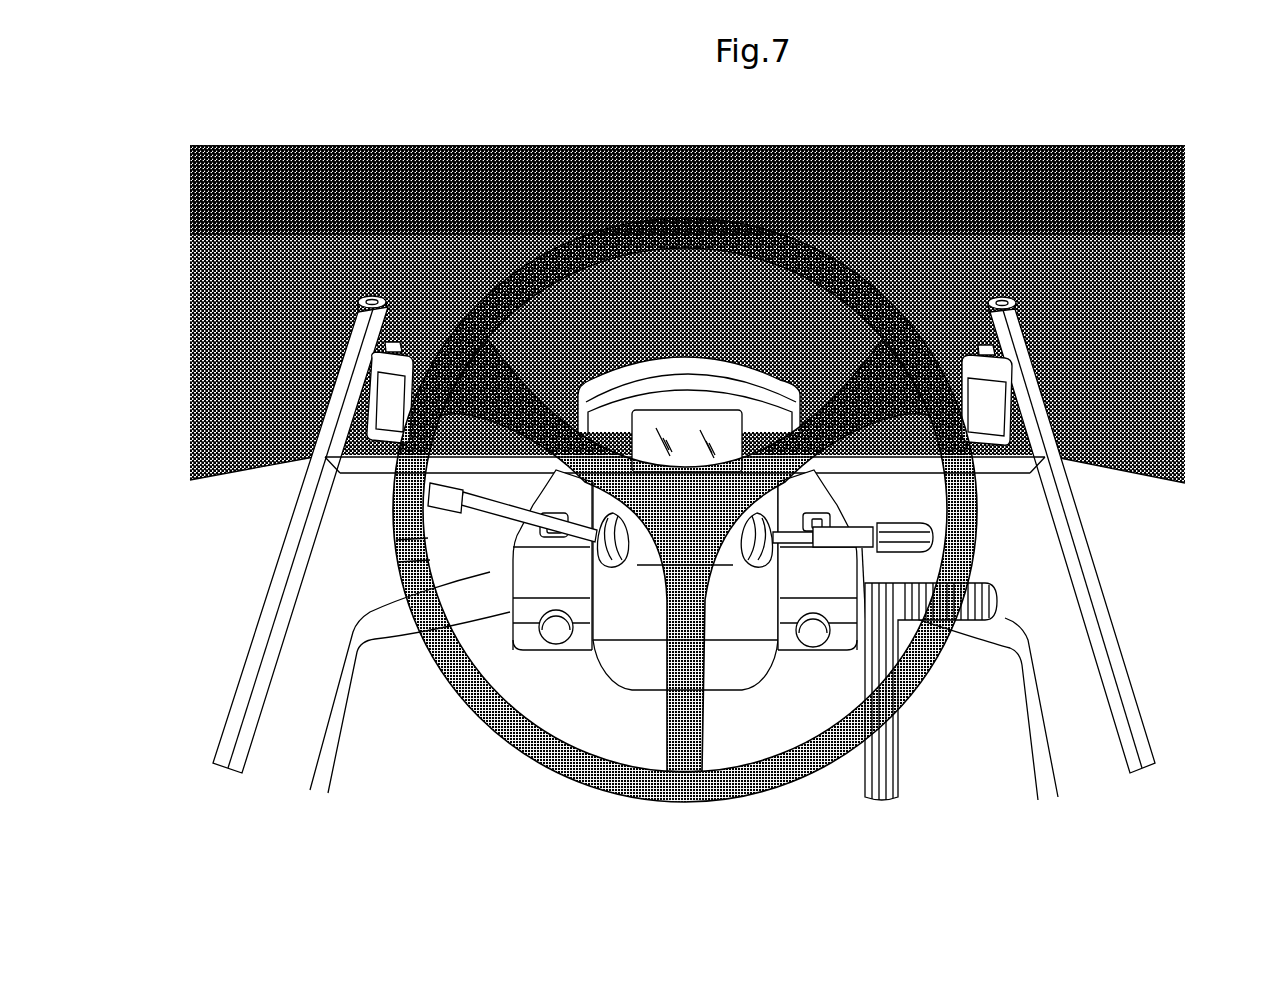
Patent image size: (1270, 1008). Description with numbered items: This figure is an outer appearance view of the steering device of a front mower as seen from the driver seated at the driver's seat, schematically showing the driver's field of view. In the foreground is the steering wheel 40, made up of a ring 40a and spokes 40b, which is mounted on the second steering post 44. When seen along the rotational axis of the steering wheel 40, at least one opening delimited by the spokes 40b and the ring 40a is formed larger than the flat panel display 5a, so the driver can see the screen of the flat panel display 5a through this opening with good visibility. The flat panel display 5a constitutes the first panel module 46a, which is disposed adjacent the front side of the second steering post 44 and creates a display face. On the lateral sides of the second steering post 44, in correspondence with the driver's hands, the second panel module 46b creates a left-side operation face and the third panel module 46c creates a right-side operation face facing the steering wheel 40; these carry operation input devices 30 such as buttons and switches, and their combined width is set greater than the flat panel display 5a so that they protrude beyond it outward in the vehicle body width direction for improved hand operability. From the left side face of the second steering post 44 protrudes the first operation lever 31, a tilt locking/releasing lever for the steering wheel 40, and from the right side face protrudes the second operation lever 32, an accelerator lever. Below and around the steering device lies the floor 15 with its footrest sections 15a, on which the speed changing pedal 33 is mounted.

The flat panel display 5a is at (648, 412).
The first panel module 46a is at (765, 418).
The first operation lever 31 is at (440, 517).
The second operation lever 32 is at (866, 524).
The operation input device 30 is at (556, 642).
The second panel module 46b is at (545, 566).
The third panel module 46c is at (820, 583).
The front pillar 15a is at (380, 707).
The floor 15 is at (697, 534).
The speed changing pedal 33 is at (906, 765).
The second steering post 44 is at (637, 620).
The steering wheel 40 is at (685, 543).
The ring 40a is at (752, 803).
The spokes 40b is at (663, 697).